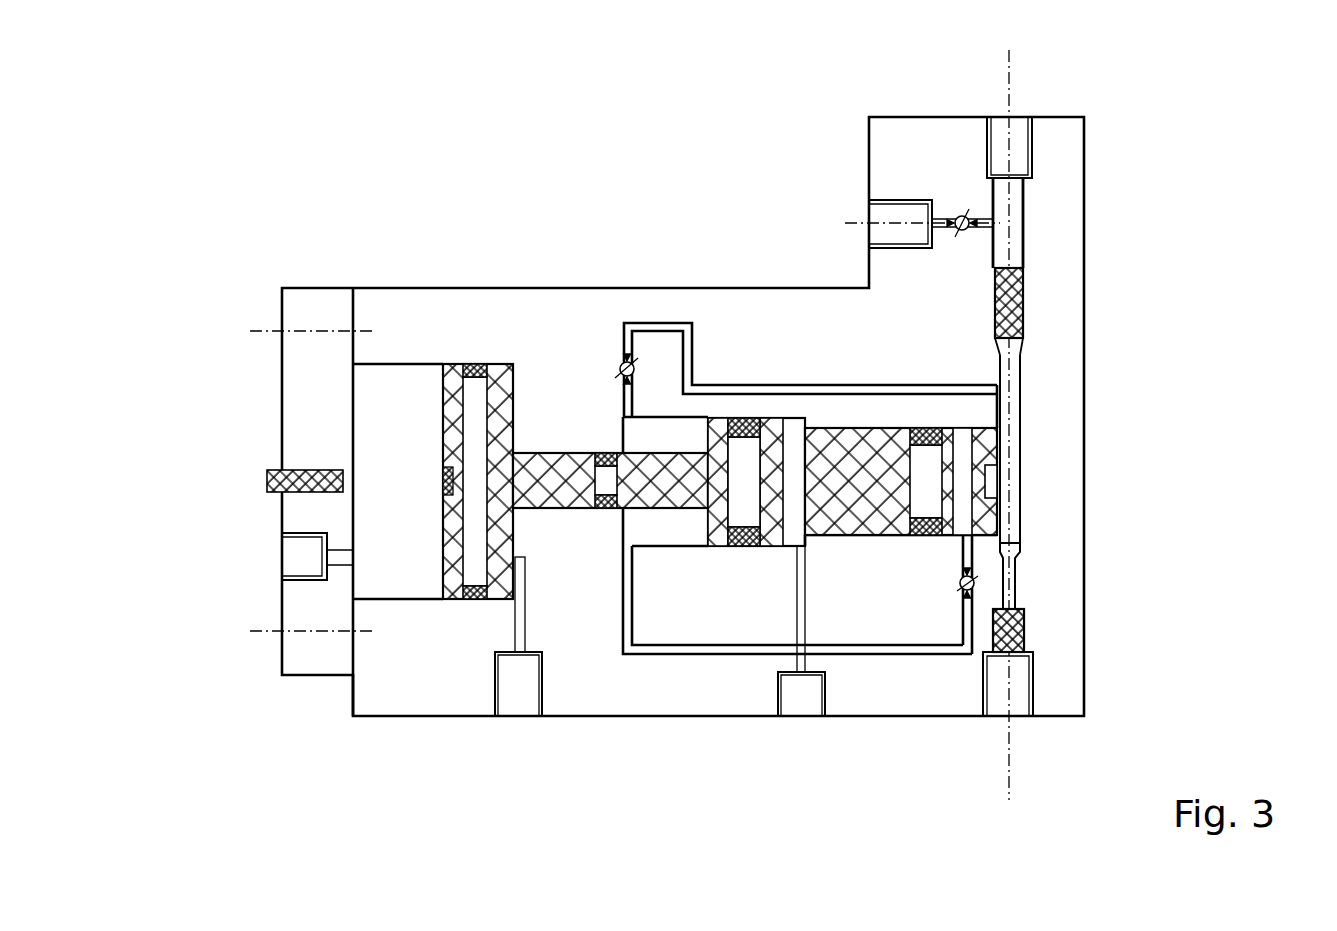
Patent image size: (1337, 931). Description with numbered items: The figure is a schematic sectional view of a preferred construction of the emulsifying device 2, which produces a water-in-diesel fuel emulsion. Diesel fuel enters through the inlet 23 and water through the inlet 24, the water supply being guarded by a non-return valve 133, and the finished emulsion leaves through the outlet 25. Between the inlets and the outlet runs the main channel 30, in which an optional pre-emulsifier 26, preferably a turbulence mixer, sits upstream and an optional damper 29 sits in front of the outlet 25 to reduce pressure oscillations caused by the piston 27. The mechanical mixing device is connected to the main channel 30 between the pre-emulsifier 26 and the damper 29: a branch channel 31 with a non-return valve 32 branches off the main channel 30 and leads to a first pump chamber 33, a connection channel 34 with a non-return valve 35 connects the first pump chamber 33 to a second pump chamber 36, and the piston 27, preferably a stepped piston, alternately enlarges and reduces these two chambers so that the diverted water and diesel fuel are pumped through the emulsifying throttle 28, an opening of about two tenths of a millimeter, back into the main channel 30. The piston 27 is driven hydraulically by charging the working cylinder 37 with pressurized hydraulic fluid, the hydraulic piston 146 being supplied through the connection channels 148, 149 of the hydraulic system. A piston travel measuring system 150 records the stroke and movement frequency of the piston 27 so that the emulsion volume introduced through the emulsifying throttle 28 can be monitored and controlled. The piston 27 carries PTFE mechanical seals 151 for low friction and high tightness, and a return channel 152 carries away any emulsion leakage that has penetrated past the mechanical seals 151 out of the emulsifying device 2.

The emulsifying device 2 is at (485, 288).
The inlet 23 is at (1008, 117).
The inlet 24 is at (868, 225).
The outlet 25 is at (1009, 718).
The pre-emulsifier 26 is at (1013, 303).
The piston 27 is at (827, 458).
The emulsifying throttle 28 is at (988, 482).
The damper 29 is at (1017, 634).
The main channel 30 is at (1020, 408).
The branch channel 31 is at (808, 425).
The non-return valve 32 is at (620, 364).
The first pump chamber 33 is at (676, 527).
The connection channel 34 is at (873, 655).
The non-return valve 35 is at (962, 592).
The second pump chamber 36 is at (995, 388).
The working cylinder 37 is at (406, 520).
The non-return valve 133 is at (963, 210).
The hydraulic piston 146 is at (443, 557).
The connection channel 148 is at (283, 552).
The connection channel 149 is at (517, 717).
The piston travel measuring system 150 is at (307, 470).
The mechanical seals 151 is at (476, 364).
The return channel 152 is at (796, 718).